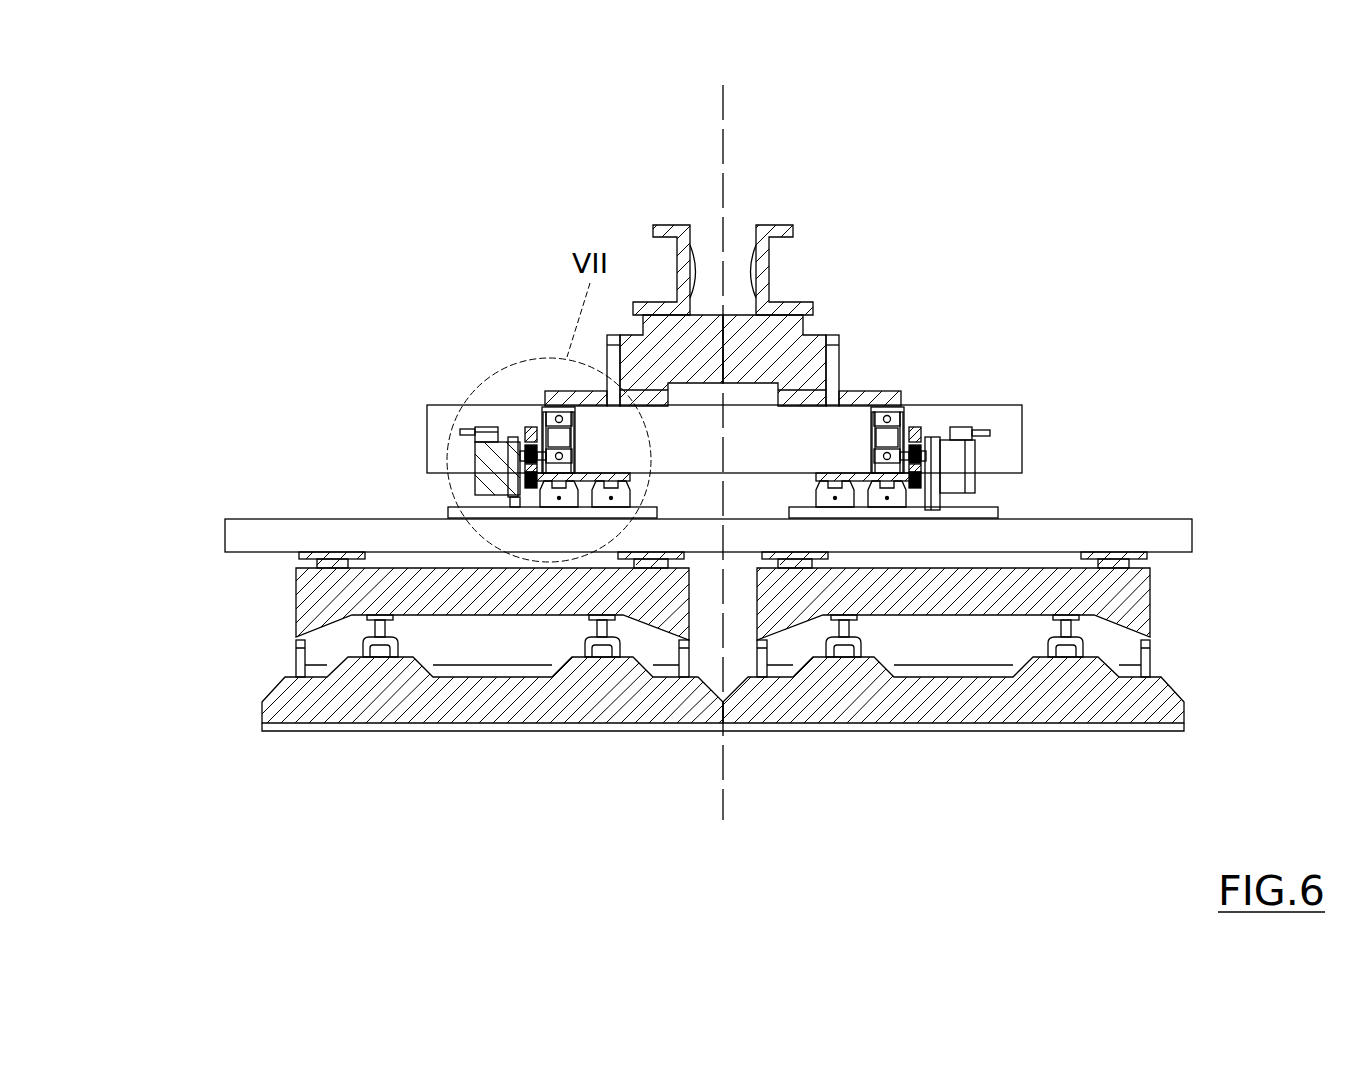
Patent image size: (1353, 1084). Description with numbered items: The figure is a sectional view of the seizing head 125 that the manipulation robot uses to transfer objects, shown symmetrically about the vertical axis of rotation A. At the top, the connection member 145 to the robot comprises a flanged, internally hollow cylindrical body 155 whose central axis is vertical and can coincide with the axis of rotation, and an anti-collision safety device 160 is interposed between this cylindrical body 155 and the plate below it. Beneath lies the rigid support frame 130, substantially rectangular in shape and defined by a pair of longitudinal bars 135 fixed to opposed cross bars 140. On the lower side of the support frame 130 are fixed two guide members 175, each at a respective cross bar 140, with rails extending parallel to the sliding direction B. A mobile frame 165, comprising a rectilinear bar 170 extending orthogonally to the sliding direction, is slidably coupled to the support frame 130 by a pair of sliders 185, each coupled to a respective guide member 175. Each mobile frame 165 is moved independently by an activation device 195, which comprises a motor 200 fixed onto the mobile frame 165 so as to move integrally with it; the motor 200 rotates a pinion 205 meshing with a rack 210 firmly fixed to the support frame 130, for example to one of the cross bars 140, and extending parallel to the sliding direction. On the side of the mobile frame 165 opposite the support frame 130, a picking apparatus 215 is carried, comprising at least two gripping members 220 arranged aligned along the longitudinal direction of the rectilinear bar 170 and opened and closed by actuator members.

The seizing head 125 is at (694, 452).
The connection member 145 is at (755, 262).
The cylindrical body 155 is at (712, 262).
The anti-collision safety device 160 is at (808, 333).
The support frame 130 is at (420, 398).
The longitudinal bar 135 is at (1007, 450).
The cross bar 140 is at (543, 420).
The rack 210 is at (531, 437).
The pinion 205 is at (520, 476).
The motor 200 is at (493, 463).
The activation device 195 is at (460, 450).
The guide member 175 is at (588, 470).
The slider 185 is at (576, 520).
The rectilinear bar 170 is at (262, 525).
The mobile frame 165 is at (212, 560).
The gripping member 220 is at (568, 700).
The picking apparatus 215 is at (663, 779).